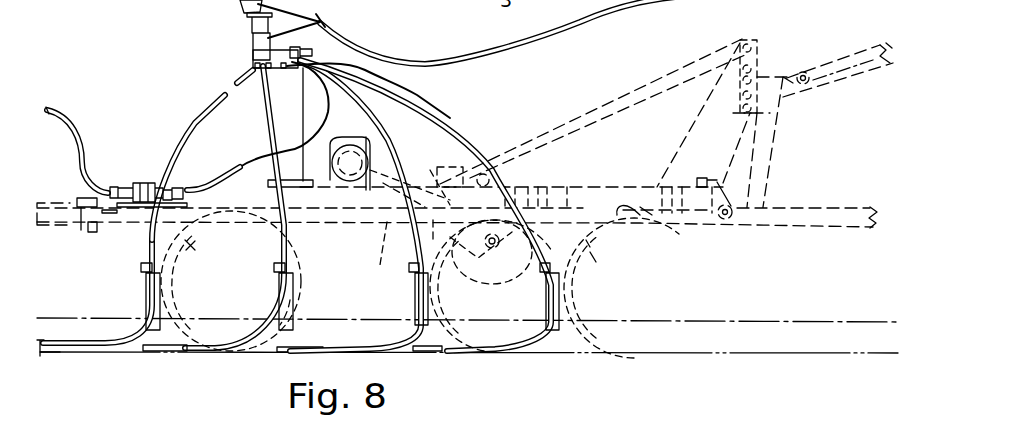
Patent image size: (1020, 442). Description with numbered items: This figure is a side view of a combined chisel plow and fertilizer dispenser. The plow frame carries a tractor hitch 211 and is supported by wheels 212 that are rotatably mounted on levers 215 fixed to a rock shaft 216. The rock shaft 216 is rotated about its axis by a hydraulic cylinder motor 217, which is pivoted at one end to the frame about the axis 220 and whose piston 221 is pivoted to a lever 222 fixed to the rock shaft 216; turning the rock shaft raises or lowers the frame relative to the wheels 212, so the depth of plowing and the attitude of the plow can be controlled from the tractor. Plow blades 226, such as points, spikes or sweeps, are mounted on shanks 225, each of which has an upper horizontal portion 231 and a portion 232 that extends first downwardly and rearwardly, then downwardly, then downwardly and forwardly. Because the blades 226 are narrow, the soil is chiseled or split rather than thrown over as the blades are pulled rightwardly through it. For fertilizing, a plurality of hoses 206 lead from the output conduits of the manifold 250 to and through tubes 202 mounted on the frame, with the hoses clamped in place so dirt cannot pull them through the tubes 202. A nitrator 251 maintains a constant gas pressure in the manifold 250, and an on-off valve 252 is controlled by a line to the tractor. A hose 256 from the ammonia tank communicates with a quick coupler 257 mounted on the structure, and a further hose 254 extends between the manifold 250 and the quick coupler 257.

The tube 202 is at (149, 293).
The hose 206 is at (443, 113).
The tractor hitch 211 is at (767, 51).
The wheels 212 is at (527, 176).
The levers 215 is at (398, 156).
The rock shaft 216 is at (365, 144).
The hydraulic cylinder motor 217 is at (467, 134).
The axis 220 is at (517, 167).
The piston 221 is at (410, 270).
The lever 222 is at (375, 245).
The shanks 225 is at (196, 248).
The plow blades 226 is at (167, 307).
The upper horizontal portion 231 is at (612, 235).
The portion 232 is at (597, 270).
The manifold 250 is at (253, 77).
The nitrator 251 is at (253, 55).
The on-off valve 252 is at (466, 32).
The hose 254 is at (383, 83).
The hose 256 is at (108, 186).
The quick coupler 257 is at (147, 231).